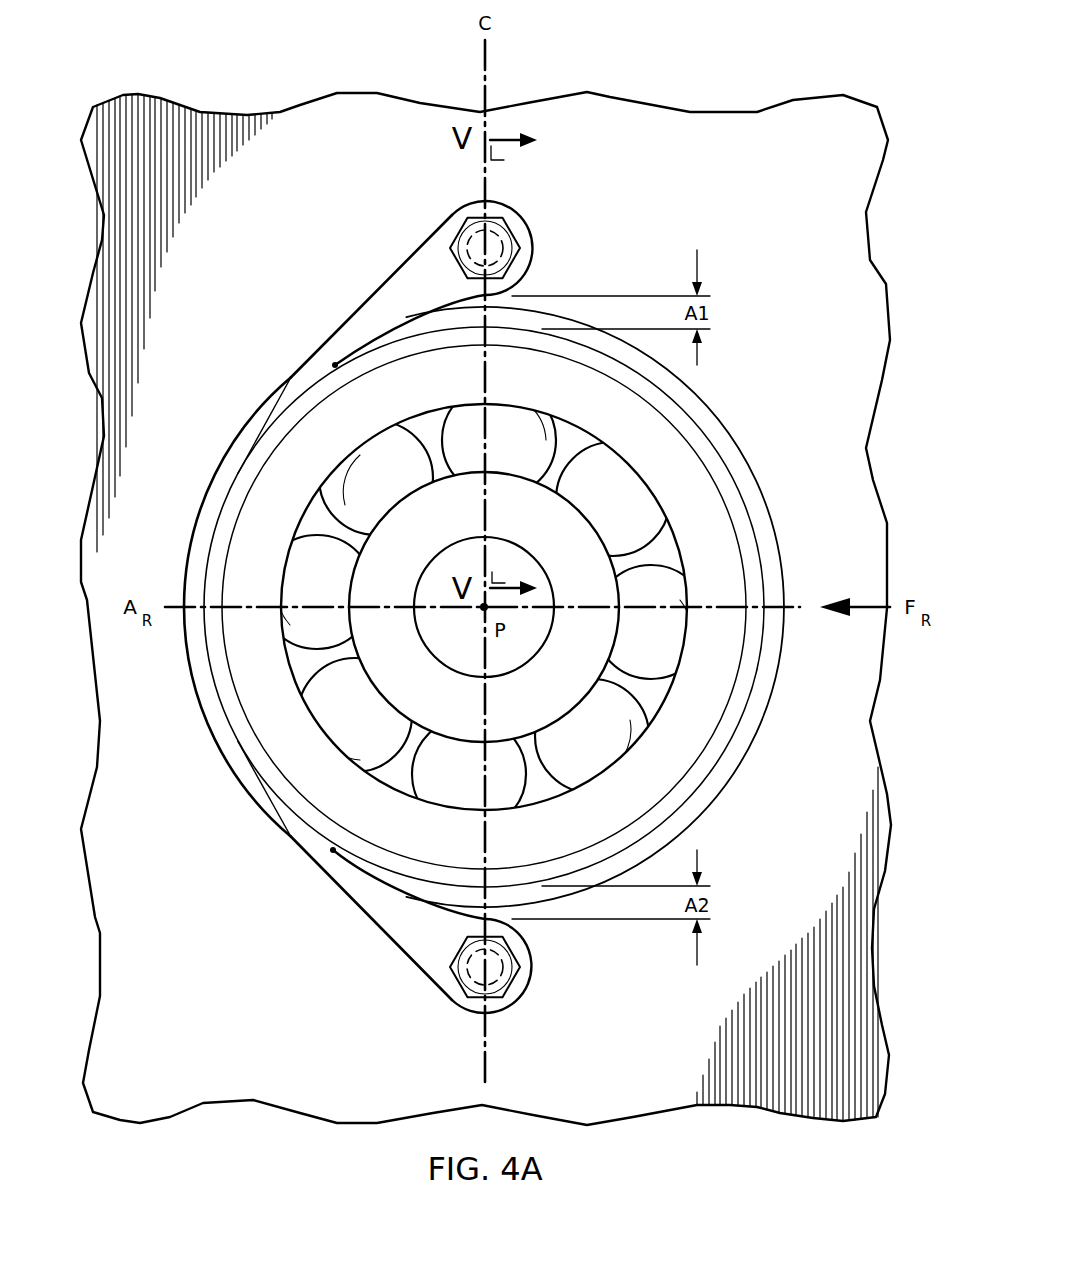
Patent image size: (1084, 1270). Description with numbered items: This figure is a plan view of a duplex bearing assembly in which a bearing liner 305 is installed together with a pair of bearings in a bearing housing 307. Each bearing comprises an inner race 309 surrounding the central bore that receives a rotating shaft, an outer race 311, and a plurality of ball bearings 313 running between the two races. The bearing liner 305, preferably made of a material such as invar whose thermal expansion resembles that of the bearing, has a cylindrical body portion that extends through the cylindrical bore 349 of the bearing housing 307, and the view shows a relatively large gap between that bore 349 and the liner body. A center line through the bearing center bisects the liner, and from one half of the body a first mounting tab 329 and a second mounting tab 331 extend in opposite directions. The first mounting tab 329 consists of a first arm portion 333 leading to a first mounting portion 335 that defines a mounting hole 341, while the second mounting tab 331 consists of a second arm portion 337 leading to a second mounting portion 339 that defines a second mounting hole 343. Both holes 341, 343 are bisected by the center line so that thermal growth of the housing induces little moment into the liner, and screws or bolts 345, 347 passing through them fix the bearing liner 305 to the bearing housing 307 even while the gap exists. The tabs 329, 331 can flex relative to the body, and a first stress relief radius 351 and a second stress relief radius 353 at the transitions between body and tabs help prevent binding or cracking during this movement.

The bearing liner 305 is at (522, 607).
The bearing housing 307 is at (736, 197).
The inner race 309 is at (509, 529).
The outer race 311 is at (536, 399).
The ball bearings 313 is at (354, 492).
The first mounting tab 329 is at (448, 286).
The second mounting tab 331 is at (447, 939).
The first arm portion 333 is at (368, 310).
The first mounting portion 335 is at (529, 245).
The second arm portion 337 is at (370, 903).
The second mounting portion 339 is at (517, 990).
The mounting hole 341 is at (528, 262).
The second mounting hole 343 is at (524, 950).
The screw or bolt 345 is at (468, 236).
The screw or bolt 347 is at (458, 980).
The cylindrical bore 349 is at (778, 566).
The first stress relief radius 351 is at (332, 362).
The second stress relief radius 353 is at (331, 852).